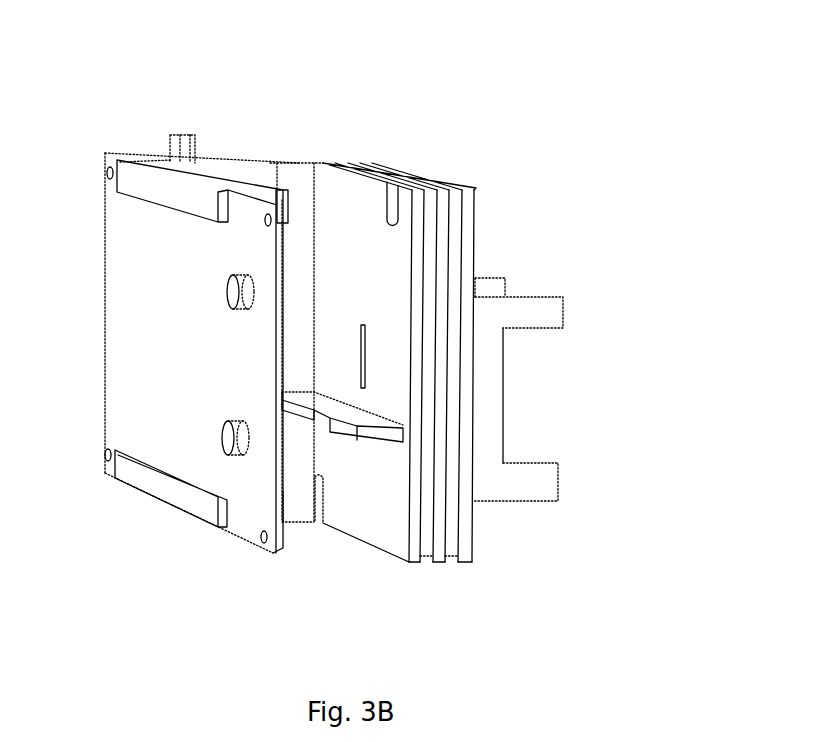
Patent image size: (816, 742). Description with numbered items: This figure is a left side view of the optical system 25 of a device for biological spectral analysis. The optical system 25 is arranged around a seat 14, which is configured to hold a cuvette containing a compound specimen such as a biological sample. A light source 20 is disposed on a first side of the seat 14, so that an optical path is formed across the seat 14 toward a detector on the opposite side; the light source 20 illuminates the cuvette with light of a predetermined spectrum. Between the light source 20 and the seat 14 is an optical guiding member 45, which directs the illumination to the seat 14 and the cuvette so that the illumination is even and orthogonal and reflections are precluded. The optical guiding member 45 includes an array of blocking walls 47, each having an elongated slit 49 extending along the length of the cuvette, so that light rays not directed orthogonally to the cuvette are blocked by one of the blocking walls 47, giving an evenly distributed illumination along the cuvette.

The seat 14 is at (307, 222).
The light source 20 is at (503, 408).
The optical system 25 is at (621, 213).
The optical guiding member 45 is at (395, 253).
The blocking walls 47 is at (413, 560).
The elongated slit 49 is at (359, 372).